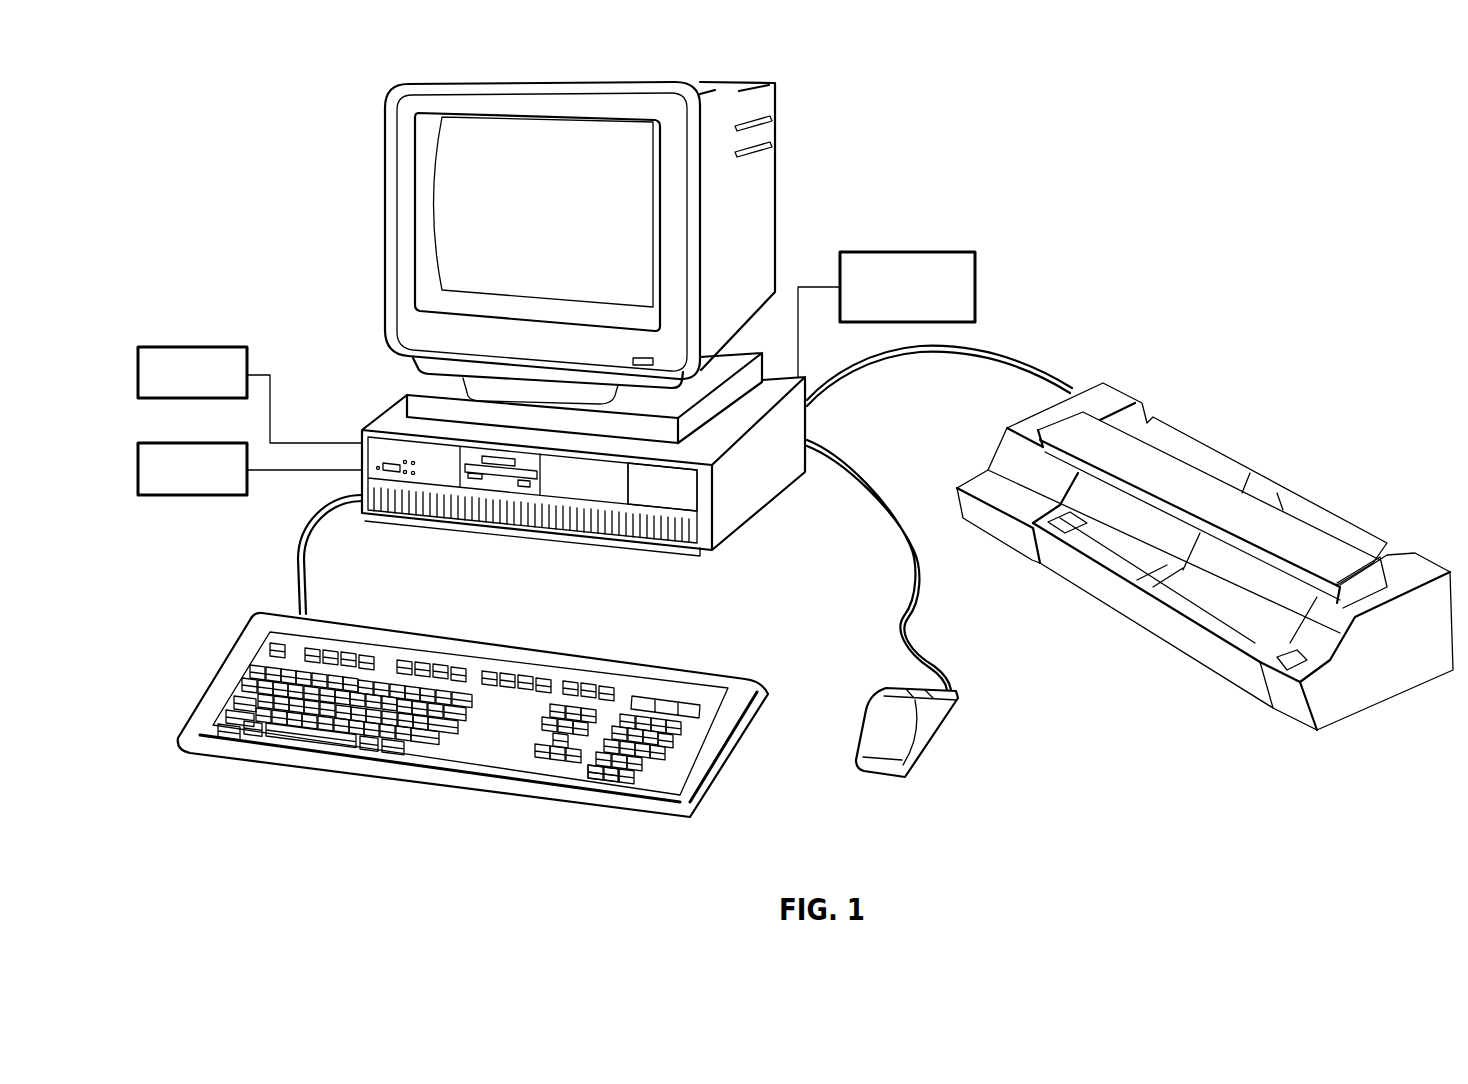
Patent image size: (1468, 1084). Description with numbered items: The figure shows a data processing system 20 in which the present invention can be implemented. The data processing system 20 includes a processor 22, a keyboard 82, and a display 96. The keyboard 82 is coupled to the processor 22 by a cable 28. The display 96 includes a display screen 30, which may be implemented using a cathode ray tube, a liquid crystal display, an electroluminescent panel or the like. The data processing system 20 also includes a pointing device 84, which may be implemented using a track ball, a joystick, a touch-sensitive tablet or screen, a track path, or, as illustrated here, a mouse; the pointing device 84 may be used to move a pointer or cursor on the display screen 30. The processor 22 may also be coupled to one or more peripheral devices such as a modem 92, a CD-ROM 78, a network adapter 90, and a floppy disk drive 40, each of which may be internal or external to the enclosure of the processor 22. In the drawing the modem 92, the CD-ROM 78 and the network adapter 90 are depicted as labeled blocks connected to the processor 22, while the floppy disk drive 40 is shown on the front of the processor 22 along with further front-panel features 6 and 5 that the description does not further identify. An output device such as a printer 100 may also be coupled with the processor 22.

The data processing system 20 is at (1025, 192).
The processor 22 is at (583, 504).
The display 96 is at (515, 243).
The display screen 30 is at (537, 222).
The keyboard 82 is at (411, 792).
The pointing device 84 is at (944, 722).
The printer 100 is at (1134, 386).
The modem 92 is at (198, 346).
The CD-ROM 78 is at (202, 497).
The network adapter 90 is at (900, 251).
The floppy disk drive 40 is at (500, 478).
The hard disk drive 6 is at (619, 510).
The drive bay 5 is at (637, 507).
The cable 28 is at (298, 548).